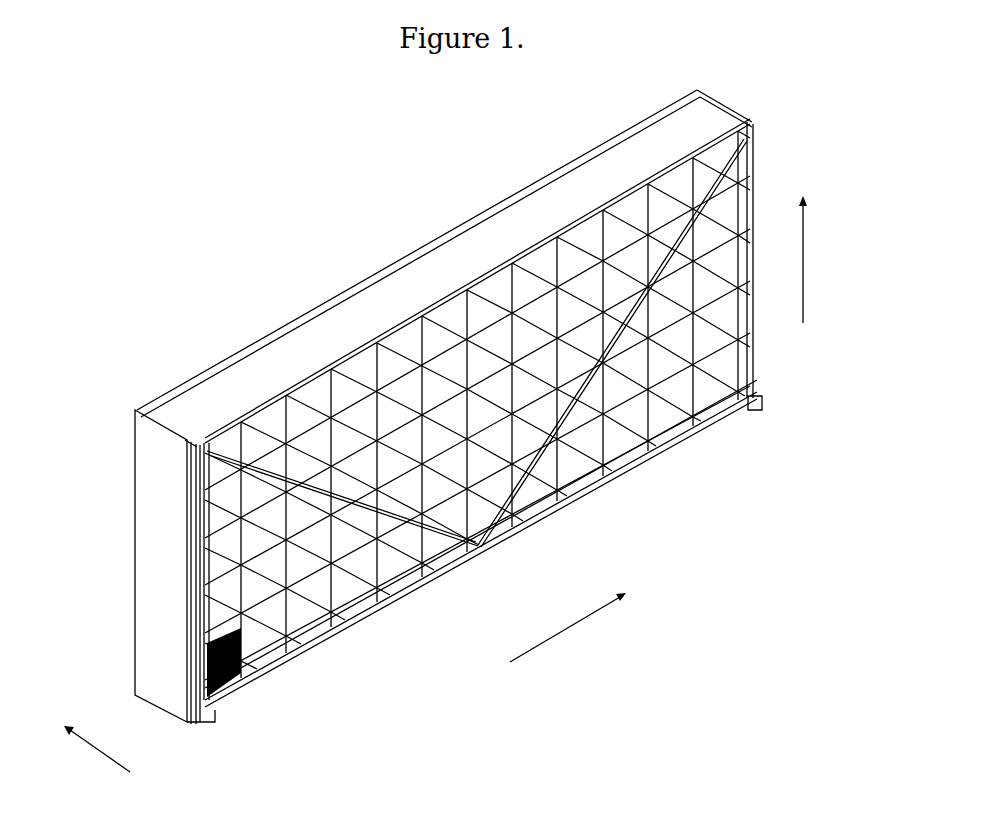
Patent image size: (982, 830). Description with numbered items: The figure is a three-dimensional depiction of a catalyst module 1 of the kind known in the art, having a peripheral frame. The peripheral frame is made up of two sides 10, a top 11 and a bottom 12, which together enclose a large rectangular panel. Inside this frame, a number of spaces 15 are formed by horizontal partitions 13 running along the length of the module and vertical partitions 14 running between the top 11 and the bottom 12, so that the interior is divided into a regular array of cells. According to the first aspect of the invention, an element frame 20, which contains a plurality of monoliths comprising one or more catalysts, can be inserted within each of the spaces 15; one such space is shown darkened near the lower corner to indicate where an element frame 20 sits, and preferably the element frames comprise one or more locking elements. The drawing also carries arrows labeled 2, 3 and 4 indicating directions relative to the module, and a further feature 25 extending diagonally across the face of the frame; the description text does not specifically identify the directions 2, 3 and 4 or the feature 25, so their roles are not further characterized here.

The mesh mat assembly 1 is at (471, 170).
The longitudinal direction 2 is at (566, 632).
The vertical direction 3 is at (806, 263).
The transverse direction 4 is at (104, 756).
The side 10 is at (747, 210).
The top 11 is at (220, 393).
The bottom 12 is at (403, 600).
The horizontal partition 13 is at (513, 428).
The vertical partition 14 is at (489, 394).
The space 15 is at (477, 400).
The element frame 20 is at (225, 690).
The tension cable 25 is at (580, 490).